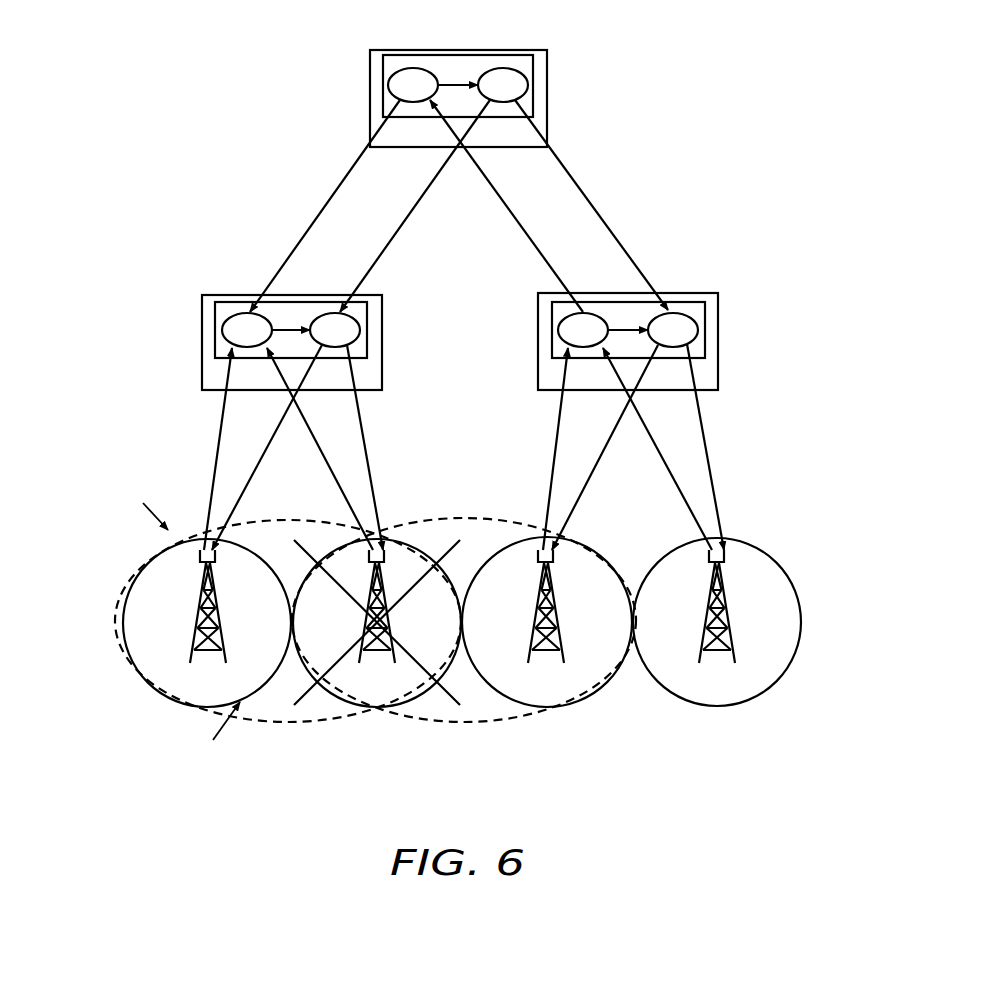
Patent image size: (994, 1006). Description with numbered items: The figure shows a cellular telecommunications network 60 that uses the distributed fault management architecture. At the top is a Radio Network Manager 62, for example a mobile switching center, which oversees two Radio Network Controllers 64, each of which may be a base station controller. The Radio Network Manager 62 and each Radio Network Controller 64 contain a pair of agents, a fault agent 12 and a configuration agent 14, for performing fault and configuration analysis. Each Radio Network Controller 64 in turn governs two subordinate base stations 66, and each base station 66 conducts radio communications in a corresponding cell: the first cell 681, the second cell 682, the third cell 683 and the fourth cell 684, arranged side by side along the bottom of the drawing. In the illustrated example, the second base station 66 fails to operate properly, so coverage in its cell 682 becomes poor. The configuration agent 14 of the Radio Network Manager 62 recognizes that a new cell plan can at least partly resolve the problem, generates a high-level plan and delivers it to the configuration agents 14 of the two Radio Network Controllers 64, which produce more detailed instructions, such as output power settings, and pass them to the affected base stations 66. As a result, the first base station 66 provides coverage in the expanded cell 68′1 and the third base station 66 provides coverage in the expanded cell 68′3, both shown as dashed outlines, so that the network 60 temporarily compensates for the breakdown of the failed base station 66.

The cellular telecommunications network 60 is at (192, 121).
The Radio Network Manager 62 is at (370, 98).
The Radio Network Controller 64 is at (222, 293).
The fault agent 12 is at (412, 66).
The configuration agent 14 is at (502, 66).
The base station 66 is at (220, 618).
The cell 681 is at (147, 652).
The cell 682 is at (395, 552).
The cell 683 is at (520, 550).
The cell 684 is at (762, 568).
The expanded cell 68′1 is at (303, 708).
The expanded cell 68′3 is at (533, 712).